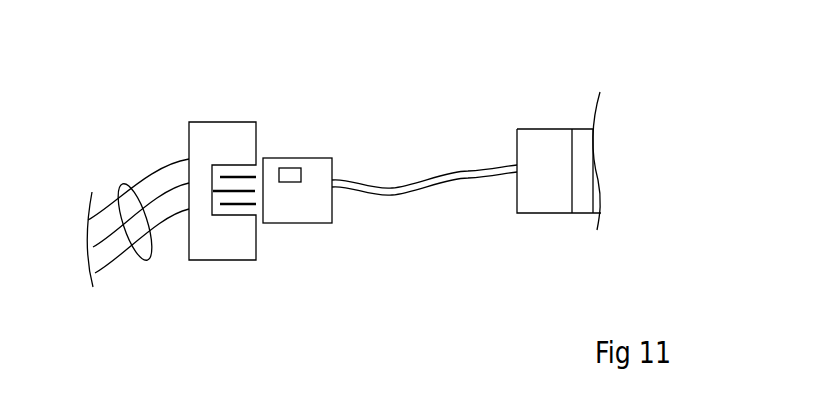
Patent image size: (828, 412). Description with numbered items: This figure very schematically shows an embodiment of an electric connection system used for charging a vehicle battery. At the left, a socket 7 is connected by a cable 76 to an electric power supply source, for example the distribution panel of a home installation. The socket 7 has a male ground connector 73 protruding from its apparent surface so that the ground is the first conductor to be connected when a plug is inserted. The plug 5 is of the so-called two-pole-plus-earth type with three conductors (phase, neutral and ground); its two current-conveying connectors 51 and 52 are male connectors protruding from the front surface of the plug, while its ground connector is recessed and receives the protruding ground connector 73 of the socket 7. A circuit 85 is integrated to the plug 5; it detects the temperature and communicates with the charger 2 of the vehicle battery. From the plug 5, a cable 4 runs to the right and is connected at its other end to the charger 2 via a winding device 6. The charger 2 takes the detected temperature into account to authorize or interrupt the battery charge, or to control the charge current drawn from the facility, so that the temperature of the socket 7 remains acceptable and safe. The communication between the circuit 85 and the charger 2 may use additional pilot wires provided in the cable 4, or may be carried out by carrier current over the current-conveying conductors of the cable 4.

The charger 2 is at (583, 140).
The cable 4 is at (377, 186).
The plug 5 is at (310, 223).
The winding device 6 is at (540, 129).
The socket 7 is at (222, 122).
The connector 51 is at (236, 177).
The connector 52 is at (239, 206).
The ground connector 73 is at (230, 206).
The cable 76 is at (130, 182).
The circuit 85 is at (289, 177).